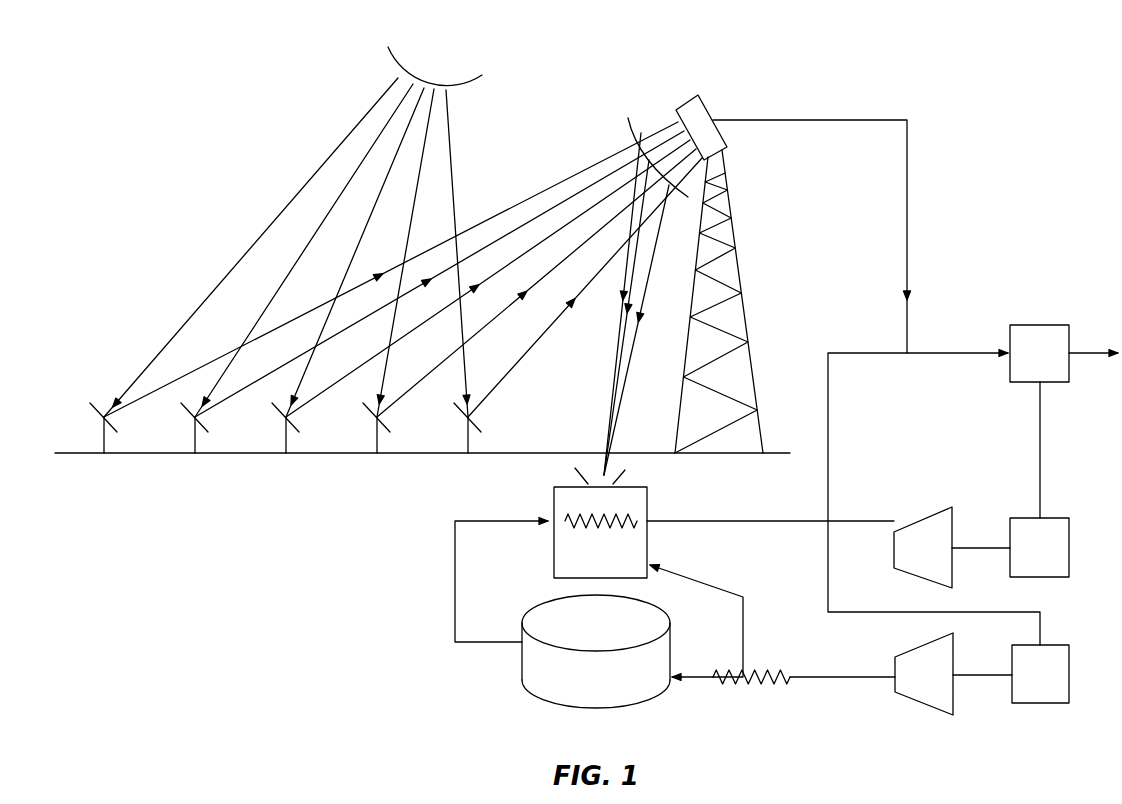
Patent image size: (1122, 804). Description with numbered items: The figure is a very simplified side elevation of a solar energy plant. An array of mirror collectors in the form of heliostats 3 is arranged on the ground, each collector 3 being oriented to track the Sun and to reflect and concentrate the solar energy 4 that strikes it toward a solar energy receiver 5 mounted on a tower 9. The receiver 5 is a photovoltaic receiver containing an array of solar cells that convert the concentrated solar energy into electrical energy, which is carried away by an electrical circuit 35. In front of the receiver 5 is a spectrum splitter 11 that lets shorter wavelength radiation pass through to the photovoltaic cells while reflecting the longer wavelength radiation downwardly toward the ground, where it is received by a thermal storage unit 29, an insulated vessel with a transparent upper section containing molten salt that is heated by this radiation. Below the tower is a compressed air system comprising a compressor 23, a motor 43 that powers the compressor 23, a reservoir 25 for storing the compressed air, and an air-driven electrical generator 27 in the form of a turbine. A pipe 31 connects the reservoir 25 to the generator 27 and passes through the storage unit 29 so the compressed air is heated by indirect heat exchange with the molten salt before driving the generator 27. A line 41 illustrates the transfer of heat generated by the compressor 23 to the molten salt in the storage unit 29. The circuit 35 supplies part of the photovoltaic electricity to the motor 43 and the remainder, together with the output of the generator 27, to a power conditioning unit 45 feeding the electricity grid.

The heliostat 3 is at (250, 244).
The reflected solar radiation 4 is at (542, 192).
The solar energy receiver 5 is at (700, 105).
The tower 9 is at (745, 302).
The spectrum splitter 11 is at (636, 126).
The compressor 23 is at (940, 700).
The reservoir 25 is at (541, 615).
The electrical generator 27 is at (938, 520).
The thermal storage unit 29 is at (563, 507).
The pipe 31 is at (453, 592).
The electrical circuit 35 is at (913, 192).
The line 41 is at (731, 590).
The motor 43 is at (1040, 704).
The power conditioning unit 45 is at (1030, 335).